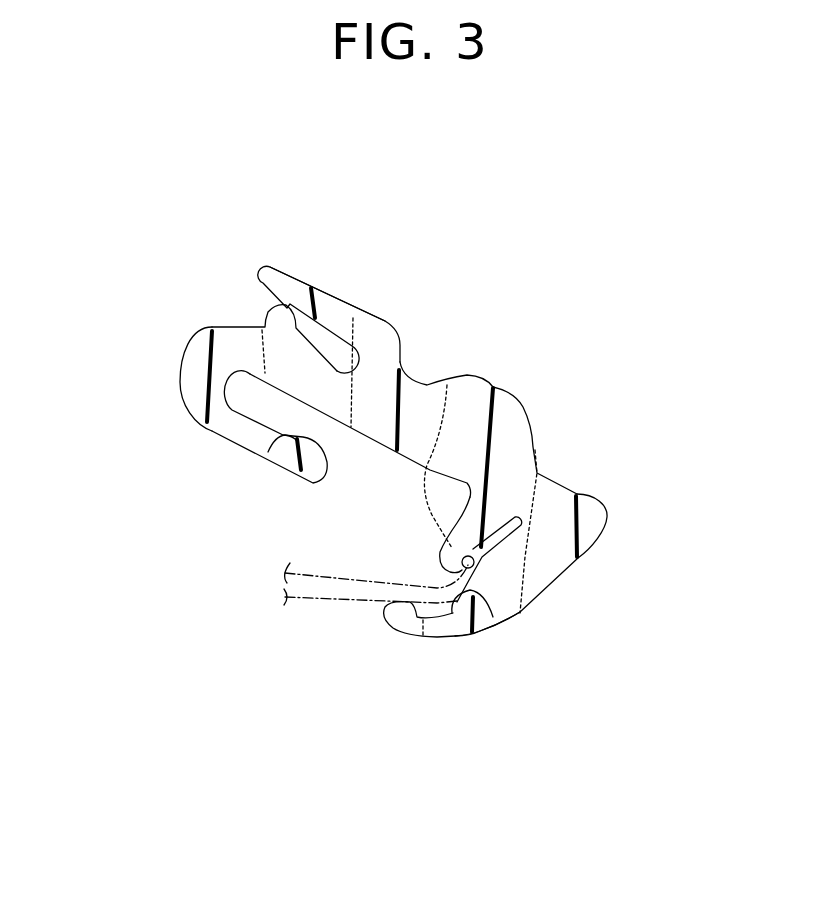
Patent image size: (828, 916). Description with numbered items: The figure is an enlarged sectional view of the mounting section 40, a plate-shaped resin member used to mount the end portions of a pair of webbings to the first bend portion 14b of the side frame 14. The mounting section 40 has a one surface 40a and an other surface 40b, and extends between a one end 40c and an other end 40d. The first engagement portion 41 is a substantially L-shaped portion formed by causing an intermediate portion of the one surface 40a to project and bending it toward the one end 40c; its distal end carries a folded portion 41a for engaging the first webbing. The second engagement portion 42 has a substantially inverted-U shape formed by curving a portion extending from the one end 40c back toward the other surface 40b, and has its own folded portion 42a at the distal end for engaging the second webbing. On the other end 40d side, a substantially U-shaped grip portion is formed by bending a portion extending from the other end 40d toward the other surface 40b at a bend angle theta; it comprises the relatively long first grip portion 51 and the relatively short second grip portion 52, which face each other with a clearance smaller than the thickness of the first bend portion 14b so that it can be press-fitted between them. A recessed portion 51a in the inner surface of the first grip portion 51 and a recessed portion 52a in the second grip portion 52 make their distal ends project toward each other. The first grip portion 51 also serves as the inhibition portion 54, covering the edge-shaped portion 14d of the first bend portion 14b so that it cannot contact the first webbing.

The mounting section 40 is at (493, 262).
The one surface 40a is at (505, 378).
The other surface 40b is at (373, 454).
The one end 40c is at (180, 350).
The other end 40d is at (534, 614).
The first engagement portion 41 is at (333, 312).
The folded portion 41a is at (262, 316).
The second engagement portion 42 is at (241, 433).
The folded portion 42a is at (263, 427).
The second grip portion 52 is at (452, 550).
The recessed portion 52a is at (445, 563).
The first grip portion 51 is at (441, 628).
The inhibition portion 54 is at (452, 671).
The recessed portion 51a is at (480, 628).
The first bend portion 14b is at (327, 598).
The side frame 14 is at (364, 620).
The edge-shaped portion 14d is at (532, 505).